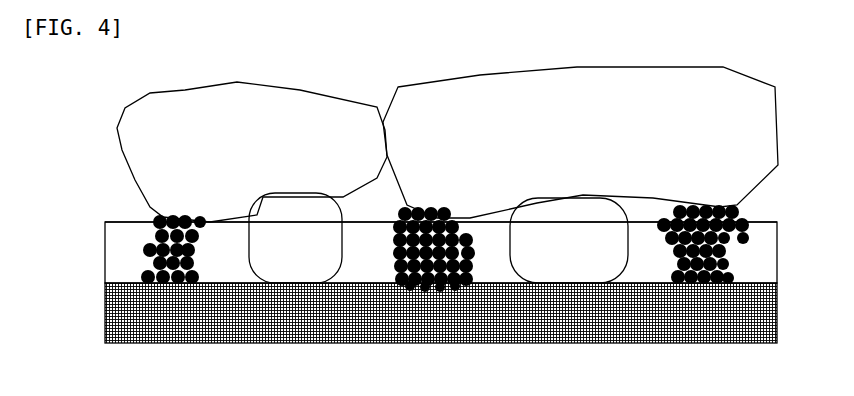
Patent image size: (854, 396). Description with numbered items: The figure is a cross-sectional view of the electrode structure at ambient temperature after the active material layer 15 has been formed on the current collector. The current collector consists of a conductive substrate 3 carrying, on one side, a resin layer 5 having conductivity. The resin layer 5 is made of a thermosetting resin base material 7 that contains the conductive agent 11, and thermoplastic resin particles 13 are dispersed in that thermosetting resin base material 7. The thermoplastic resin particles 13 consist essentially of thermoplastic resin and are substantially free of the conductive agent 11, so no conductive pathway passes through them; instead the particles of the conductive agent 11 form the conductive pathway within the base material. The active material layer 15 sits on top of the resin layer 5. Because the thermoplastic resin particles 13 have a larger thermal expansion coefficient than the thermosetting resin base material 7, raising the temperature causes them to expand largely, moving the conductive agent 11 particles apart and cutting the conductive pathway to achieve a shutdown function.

The conductive substrate 3 is at (452, 330).
The resin layer 5 is at (782, 282).
The thermosetting resin base material 7 is at (137, 222).
The conductive agent 11 is at (152, 245).
The thermoplastic resin particles 13 is at (292, 268).
The active material layer 15 is at (268, 97).